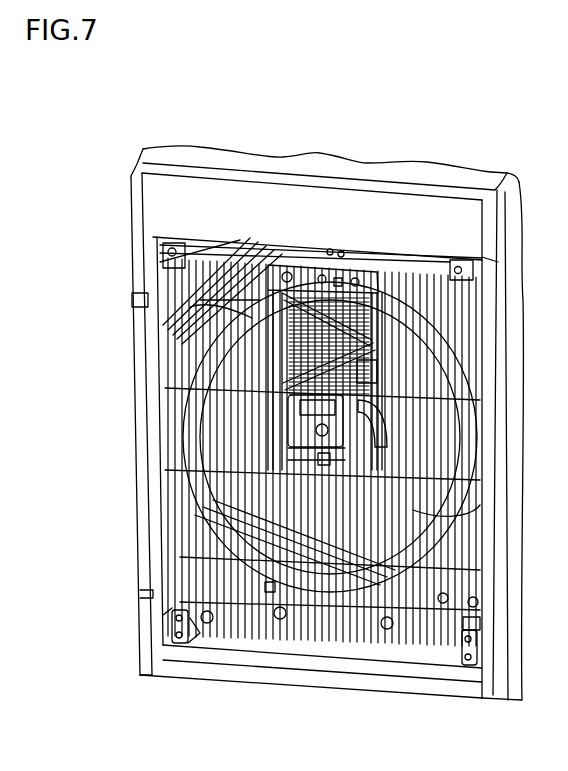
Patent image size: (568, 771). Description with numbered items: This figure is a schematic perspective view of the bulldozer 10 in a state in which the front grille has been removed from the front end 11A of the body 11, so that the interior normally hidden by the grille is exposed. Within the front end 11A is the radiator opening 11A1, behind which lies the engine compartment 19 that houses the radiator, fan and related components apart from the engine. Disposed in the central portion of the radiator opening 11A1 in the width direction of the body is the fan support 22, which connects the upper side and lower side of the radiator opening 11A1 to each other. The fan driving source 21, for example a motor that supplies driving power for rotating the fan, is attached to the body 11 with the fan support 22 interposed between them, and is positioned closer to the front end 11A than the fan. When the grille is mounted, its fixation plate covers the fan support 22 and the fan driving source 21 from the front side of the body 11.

The bulldozer 10 is at (217, 97).
The body 11 is at (317, 168).
The front end 11A is at (374, 218).
The radiator opening 11A1 is at (338, 647).
The engine compartment 19 is at (249, 162).
The fan driving source 21 is at (335, 452).
The fan support 22 is at (277, 370).